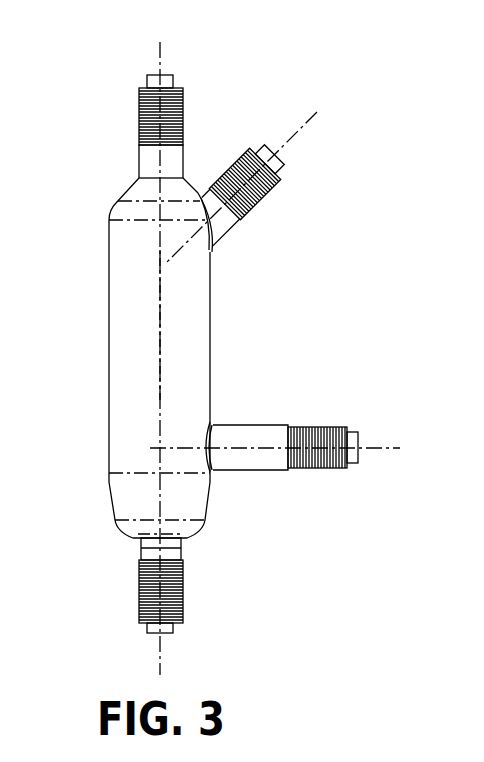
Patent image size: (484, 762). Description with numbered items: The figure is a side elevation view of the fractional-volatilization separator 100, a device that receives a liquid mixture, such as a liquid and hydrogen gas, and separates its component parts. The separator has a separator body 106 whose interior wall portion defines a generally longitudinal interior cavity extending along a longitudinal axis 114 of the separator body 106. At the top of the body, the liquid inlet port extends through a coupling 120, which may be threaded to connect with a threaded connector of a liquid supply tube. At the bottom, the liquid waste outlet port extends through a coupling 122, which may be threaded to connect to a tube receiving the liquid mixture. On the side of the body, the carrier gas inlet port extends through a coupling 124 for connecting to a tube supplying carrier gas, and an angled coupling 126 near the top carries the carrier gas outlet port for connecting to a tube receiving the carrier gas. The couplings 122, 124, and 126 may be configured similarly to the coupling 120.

The fractional-volatilization separator 100 is at (247, 56).
The separator body 106 is at (109, 332).
The longitudinal axis 114 is at (160, 393).
The coupling 120 is at (140, 108).
The coupling 122 is at (183, 573).
The coupling 124 is at (322, 425).
The coupling 126 is at (268, 193).